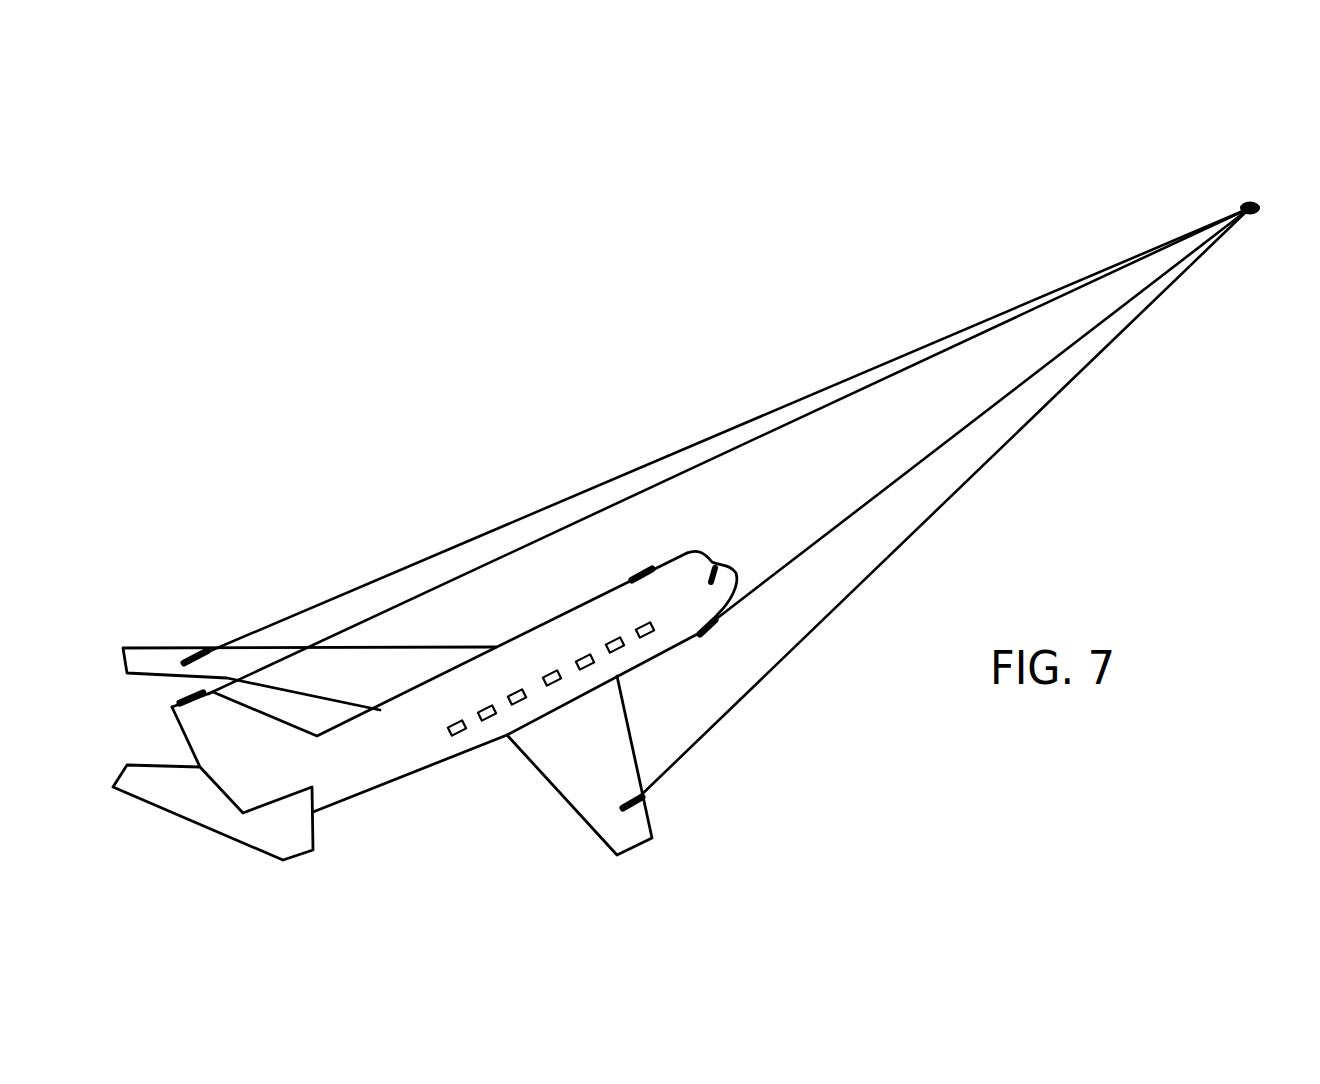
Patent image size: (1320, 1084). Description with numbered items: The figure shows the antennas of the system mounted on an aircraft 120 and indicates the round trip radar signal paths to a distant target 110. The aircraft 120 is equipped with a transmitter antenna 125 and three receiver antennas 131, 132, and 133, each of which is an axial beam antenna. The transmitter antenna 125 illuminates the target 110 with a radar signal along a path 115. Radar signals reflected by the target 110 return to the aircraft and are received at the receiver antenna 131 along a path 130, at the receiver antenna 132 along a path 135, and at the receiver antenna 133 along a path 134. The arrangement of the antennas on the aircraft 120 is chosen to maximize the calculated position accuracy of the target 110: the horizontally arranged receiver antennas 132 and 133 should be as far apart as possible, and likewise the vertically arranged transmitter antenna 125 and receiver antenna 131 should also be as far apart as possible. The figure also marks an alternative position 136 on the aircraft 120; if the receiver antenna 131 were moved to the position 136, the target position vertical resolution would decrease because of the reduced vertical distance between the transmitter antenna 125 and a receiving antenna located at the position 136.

The target 110 is at (1259, 201).
The path 115 is at (481, 560).
The aircraft 120 is at (470, 753).
The transmitter antenna 125 is at (181, 699).
The path 130 is at (792, 557).
The receiver antenna 131 is at (713, 627).
The receiver antenna 132 is at (647, 813).
The receiver antenna 133 is at (193, 652).
The path 134 is at (377, 578).
The path 135 is at (741, 701).
The position 136 is at (641, 574).